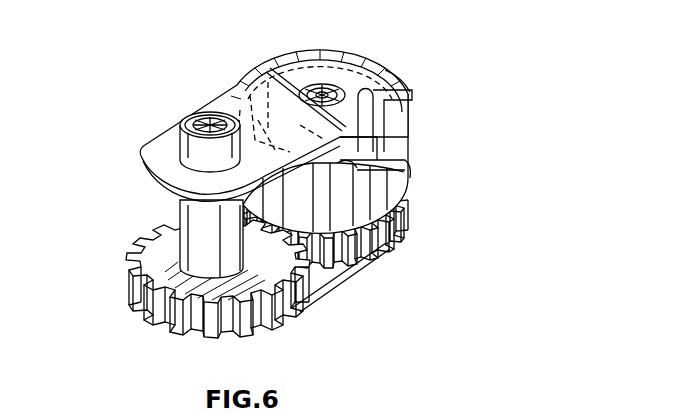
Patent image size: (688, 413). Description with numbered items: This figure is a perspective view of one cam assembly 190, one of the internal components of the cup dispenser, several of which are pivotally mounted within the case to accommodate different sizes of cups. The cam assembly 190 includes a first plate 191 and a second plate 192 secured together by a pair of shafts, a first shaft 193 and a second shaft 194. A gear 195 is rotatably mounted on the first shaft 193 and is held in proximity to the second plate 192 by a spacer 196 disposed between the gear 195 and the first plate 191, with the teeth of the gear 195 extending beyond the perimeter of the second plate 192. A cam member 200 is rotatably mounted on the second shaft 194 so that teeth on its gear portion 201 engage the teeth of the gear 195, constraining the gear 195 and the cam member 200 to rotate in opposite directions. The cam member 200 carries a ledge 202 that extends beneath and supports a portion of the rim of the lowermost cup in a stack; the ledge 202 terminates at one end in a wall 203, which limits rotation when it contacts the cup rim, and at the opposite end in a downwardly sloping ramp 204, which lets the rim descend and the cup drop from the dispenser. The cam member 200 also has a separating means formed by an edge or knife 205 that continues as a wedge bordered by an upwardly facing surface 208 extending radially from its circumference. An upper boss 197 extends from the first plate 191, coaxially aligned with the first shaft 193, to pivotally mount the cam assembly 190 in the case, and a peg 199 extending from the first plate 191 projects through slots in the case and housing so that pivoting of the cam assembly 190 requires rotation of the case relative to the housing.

The cam assembly 190 is at (445, 48).
The first plate 191 is at (142, 160).
The second plate 192 is at (313, 290).
The first shaft 193 is at (207, 115).
The second shaft 194 is at (317, 84).
The gear 195 is at (140, 303).
The spacer 196 is at (180, 215).
The upper boss 197 is at (180, 138).
The peg 199 is at (357, 58).
The cam member 200 is at (403, 204).
The gear portion 201 is at (384, 242).
The ledge 202 is at (410, 184).
The wall 203 is at (237, 75).
The ramp 204 is at (357, 163).
The knife 205 is at (412, 90).
The upwardly facing surface 208 is at (397, 76).